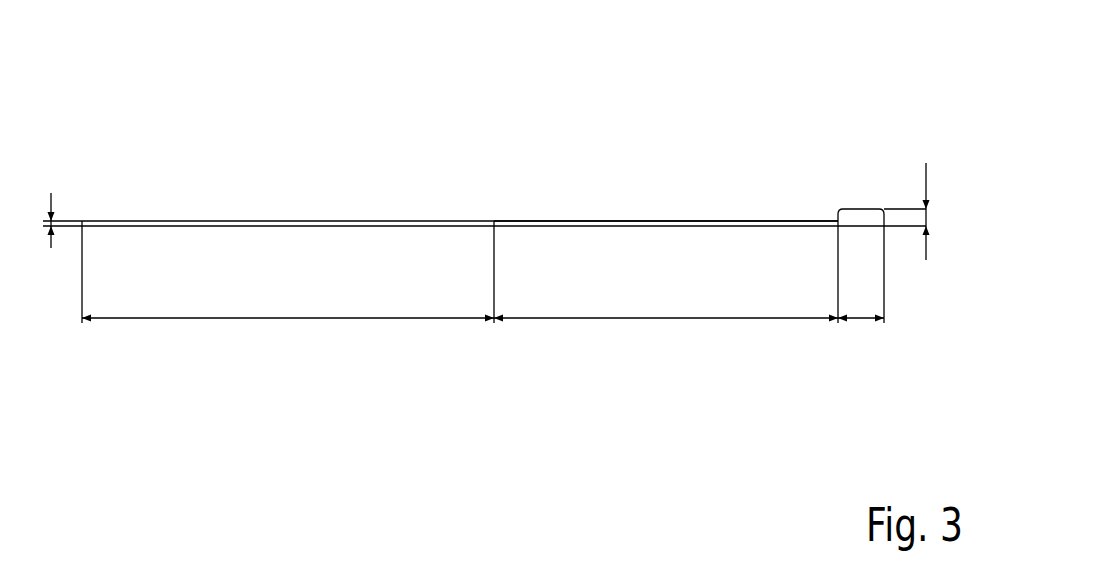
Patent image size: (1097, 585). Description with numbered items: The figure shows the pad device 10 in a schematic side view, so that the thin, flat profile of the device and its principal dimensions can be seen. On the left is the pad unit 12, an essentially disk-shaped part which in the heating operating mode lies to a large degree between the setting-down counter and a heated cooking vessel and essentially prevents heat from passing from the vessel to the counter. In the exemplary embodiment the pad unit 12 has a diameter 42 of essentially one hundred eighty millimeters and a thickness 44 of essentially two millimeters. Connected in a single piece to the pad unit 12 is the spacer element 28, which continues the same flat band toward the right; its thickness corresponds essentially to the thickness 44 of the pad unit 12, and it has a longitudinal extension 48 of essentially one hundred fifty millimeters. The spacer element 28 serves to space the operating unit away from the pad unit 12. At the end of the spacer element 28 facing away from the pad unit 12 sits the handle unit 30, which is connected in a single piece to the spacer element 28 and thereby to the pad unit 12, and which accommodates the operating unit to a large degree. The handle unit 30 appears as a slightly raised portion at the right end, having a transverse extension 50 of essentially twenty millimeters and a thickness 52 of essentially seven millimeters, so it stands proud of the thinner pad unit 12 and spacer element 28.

The pad device 10 is at (905, 116).
The pad unit 12 is at (297, 221).
The spacer element 28 is at (622, 221).
The handle unit 30 is at (849, 219).
The diameter 42 is at (296, 318).
The thickness 44 is at (51, 197).
The longitudinal extension 48 is at (662, 318).
The transverse extension 50 is at (860, 320).
The thickness 52 is at (927, 245).